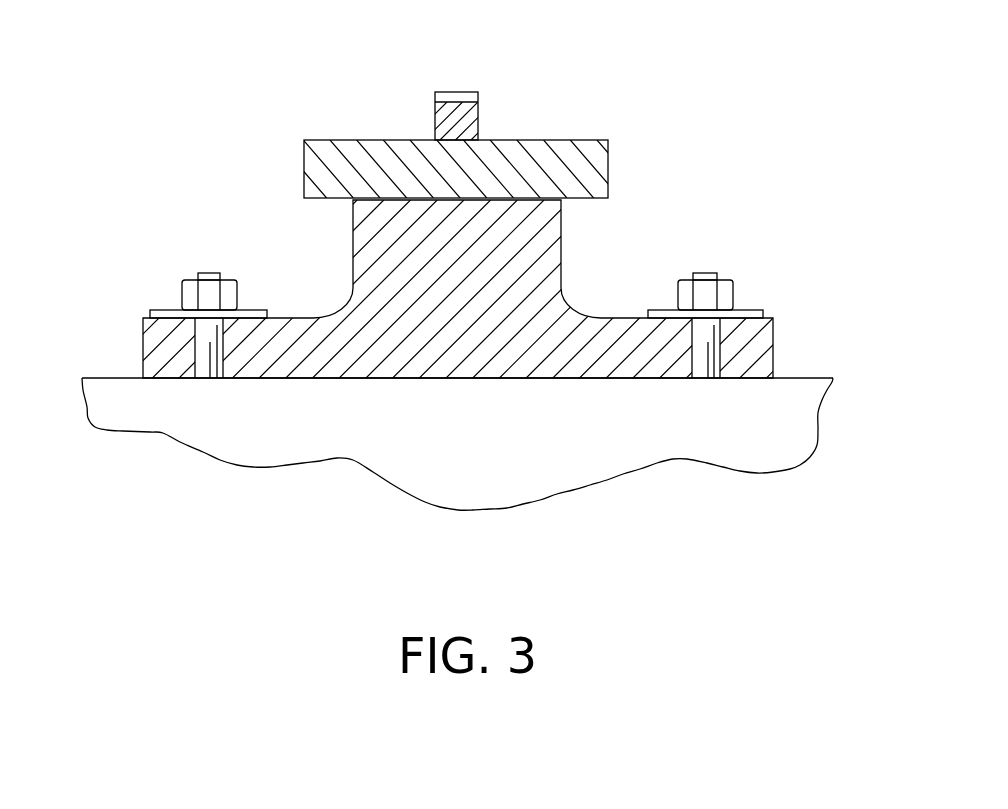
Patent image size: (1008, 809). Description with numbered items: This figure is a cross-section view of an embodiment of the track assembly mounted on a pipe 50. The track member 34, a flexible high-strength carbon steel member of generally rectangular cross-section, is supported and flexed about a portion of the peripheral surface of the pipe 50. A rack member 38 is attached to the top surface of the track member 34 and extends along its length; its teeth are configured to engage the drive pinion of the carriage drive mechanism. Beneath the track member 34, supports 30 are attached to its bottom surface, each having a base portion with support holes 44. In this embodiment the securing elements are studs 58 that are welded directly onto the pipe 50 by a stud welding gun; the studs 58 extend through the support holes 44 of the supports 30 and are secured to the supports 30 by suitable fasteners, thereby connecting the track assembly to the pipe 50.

The support 30 is at (570, 314).
The track member 34 is at (610, 163).
The rack member 38 is at (478, 121).
The support hole 44 is at (740, 310).
The pipe 50 is at (483, 438).
The stud 58 is at (209, 273).